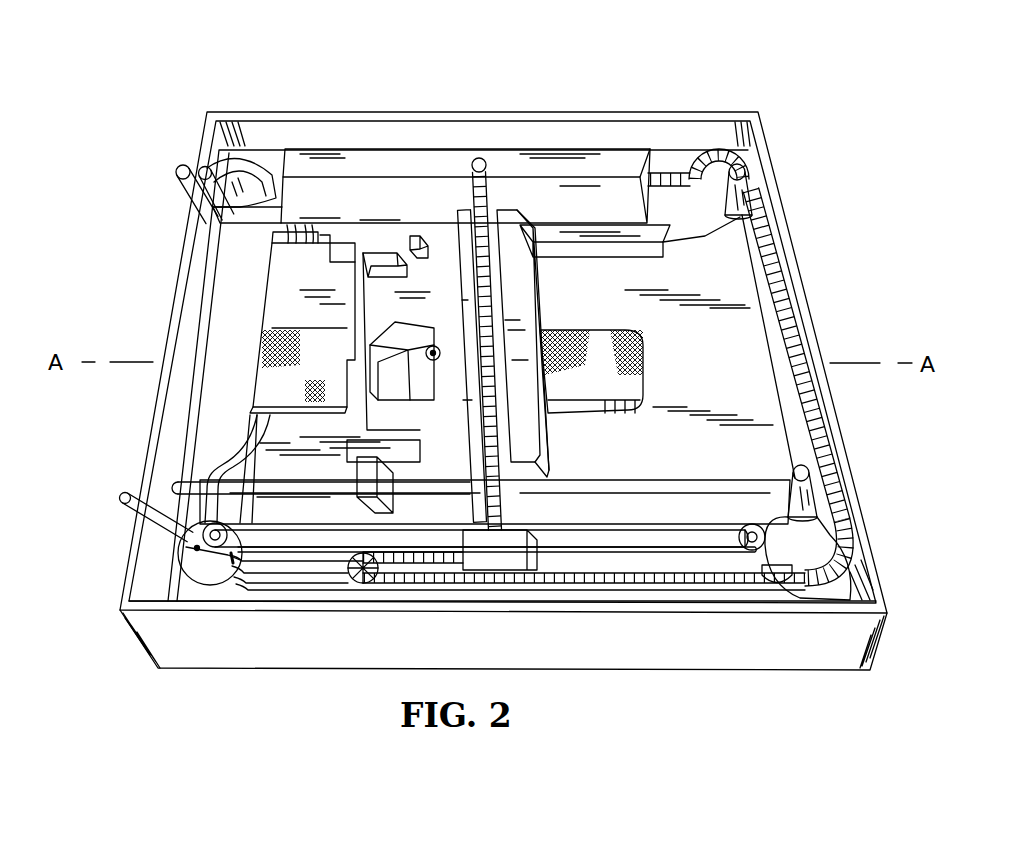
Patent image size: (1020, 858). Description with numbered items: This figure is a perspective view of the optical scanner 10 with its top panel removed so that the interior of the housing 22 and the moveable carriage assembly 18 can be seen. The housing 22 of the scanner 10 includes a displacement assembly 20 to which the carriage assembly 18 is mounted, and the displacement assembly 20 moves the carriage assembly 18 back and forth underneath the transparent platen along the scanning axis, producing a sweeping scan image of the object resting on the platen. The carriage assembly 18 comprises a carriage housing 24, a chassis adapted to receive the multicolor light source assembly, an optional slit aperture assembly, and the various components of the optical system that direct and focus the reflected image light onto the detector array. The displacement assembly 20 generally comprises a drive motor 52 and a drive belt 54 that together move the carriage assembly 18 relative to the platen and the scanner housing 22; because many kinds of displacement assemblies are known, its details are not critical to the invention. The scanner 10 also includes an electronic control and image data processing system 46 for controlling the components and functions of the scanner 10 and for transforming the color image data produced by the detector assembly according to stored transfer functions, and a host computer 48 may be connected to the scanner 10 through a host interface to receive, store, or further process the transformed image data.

The optical scanner 10 is at (190, 78).
The housing 22 is at (298, 112).
The carriage housing 24 is at (384, 227).
The electronic control and image data processing system 46 is at (480, 154).
The moveable carriage assembly 18 is at (538, 293).
The host computer 48 is at (500, 435).
The drive belt 54 is at (640, 522).
The displacement assembly 20 is at (176, 550).
The drive motor 52 is at (180, 580).